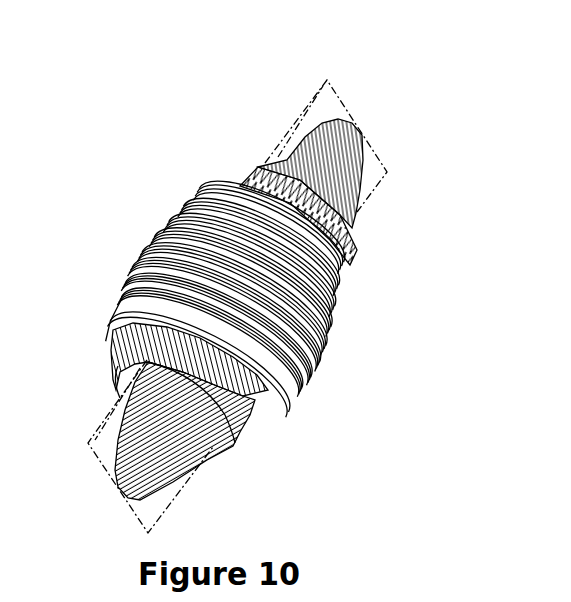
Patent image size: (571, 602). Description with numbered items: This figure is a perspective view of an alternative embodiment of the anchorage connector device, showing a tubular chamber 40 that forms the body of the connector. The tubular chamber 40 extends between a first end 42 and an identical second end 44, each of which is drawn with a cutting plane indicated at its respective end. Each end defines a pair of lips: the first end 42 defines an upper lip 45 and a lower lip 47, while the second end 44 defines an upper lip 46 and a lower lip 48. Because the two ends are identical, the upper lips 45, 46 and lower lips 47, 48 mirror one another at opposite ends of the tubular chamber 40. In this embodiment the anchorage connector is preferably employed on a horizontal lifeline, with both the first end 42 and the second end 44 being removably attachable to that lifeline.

The tubular chamber 40 is at (428, 325).
The first end 42 is at (335, 100).
The second end 44 is at (133, 503).
The upper lip 45 is at (365, 143).
The upper lip 46 is at (190, 448).
The lower lip 47 is at (268, 160).
The lower lip 48 is at (118, 383).